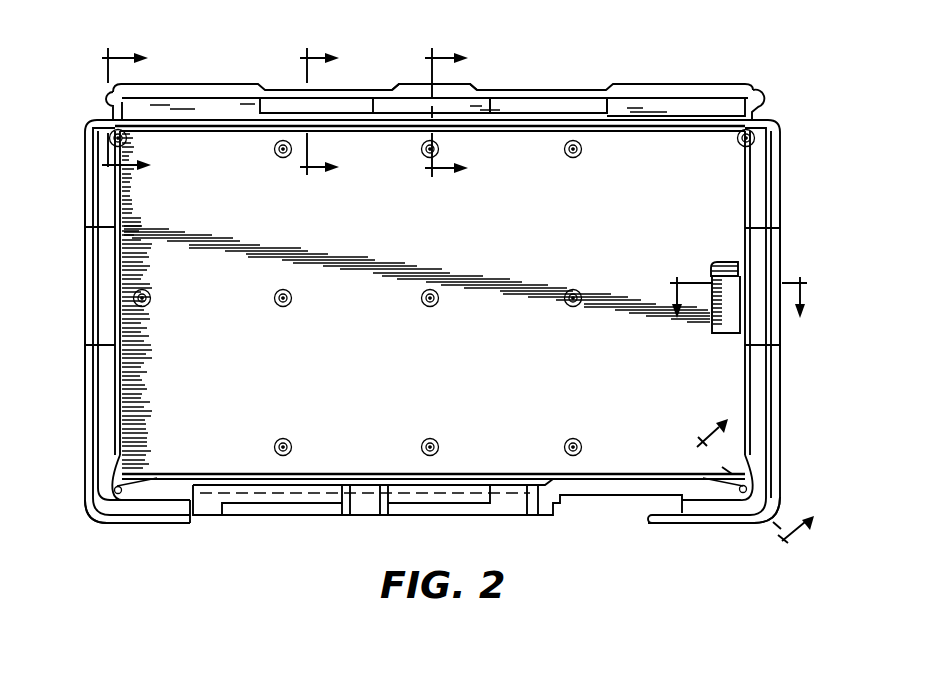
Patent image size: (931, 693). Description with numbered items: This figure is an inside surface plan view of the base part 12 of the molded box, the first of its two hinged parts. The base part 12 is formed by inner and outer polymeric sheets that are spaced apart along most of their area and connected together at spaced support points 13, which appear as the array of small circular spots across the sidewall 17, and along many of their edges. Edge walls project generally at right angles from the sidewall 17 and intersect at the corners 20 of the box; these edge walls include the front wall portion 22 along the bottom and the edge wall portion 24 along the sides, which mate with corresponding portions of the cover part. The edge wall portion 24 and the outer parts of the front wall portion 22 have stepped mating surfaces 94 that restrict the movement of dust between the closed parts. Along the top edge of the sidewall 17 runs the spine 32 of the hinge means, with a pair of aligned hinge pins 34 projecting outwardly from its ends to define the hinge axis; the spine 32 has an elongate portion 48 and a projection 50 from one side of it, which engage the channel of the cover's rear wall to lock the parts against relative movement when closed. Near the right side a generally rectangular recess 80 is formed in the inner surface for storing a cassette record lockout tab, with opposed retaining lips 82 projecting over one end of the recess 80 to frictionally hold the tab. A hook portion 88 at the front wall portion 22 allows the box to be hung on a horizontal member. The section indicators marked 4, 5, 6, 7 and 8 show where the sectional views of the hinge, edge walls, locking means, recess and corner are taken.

The base part 12 is at (784, 151).
The support points 13 is at (563, 438).
The sidewall 17 is at (372, 368).
The corners 20 is at (100, 524).
The front wall portion 22 is at (702, 524).
The edge wall portion 24 is at (85, 325).
The spine 32 is at (692, 88).
The hinge pins 34 is at (103, 97).
The elongate portion 48 is at (548, 97).
The projection 50 is at (398, 84).
The recess 80 is at (712, 330).
The retaining lips 82 is at (727, 263).
The hook portion 88 is at (656, 526).
The stepped mating surfaces 94 is at (92, 267).
The section line 4- 4 is at (439, 123).
The section line 5- 5 is at (132, 115).
The section line 6- 6 is at (312, 119).
The section line 7- 7 is at (738, 280).
The section line 8- 8 is at (733, 506).